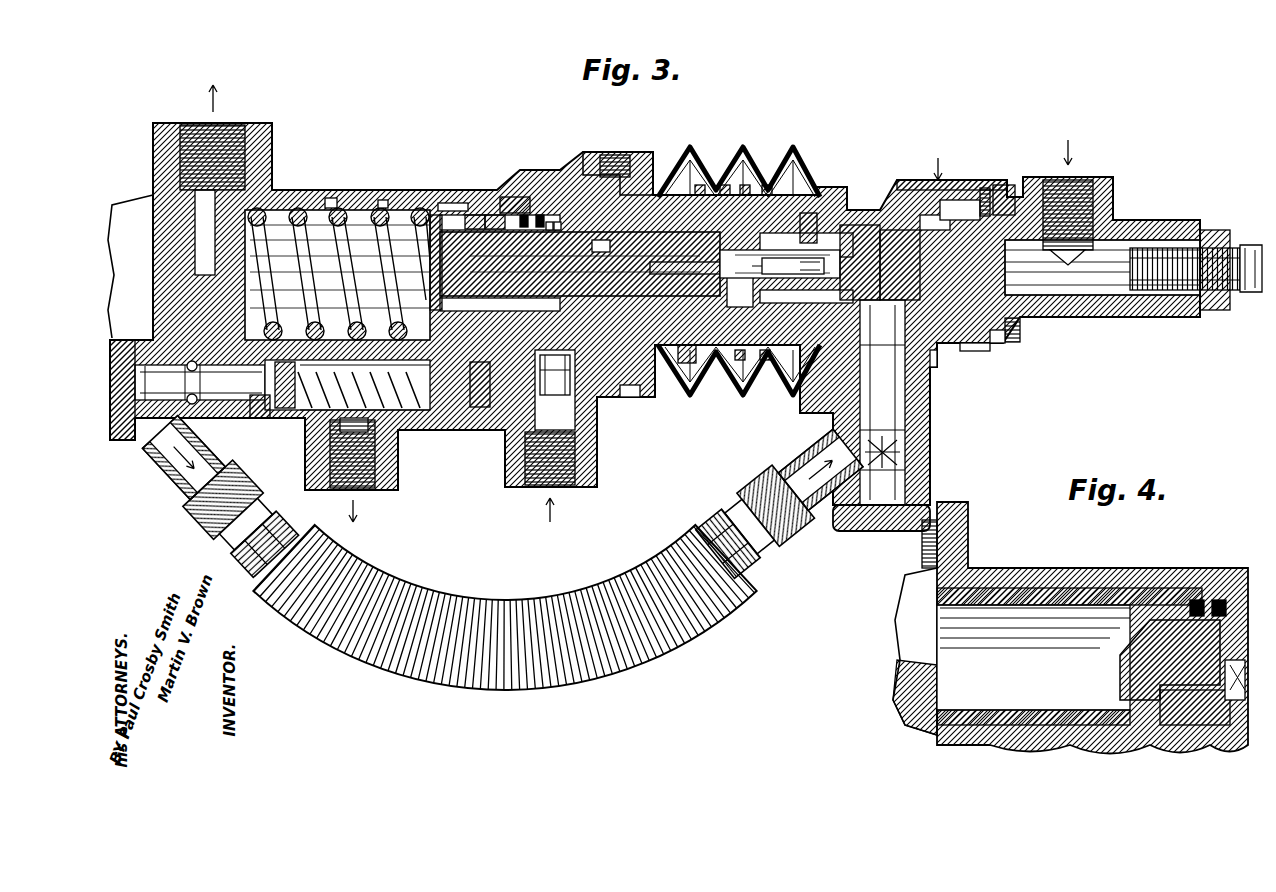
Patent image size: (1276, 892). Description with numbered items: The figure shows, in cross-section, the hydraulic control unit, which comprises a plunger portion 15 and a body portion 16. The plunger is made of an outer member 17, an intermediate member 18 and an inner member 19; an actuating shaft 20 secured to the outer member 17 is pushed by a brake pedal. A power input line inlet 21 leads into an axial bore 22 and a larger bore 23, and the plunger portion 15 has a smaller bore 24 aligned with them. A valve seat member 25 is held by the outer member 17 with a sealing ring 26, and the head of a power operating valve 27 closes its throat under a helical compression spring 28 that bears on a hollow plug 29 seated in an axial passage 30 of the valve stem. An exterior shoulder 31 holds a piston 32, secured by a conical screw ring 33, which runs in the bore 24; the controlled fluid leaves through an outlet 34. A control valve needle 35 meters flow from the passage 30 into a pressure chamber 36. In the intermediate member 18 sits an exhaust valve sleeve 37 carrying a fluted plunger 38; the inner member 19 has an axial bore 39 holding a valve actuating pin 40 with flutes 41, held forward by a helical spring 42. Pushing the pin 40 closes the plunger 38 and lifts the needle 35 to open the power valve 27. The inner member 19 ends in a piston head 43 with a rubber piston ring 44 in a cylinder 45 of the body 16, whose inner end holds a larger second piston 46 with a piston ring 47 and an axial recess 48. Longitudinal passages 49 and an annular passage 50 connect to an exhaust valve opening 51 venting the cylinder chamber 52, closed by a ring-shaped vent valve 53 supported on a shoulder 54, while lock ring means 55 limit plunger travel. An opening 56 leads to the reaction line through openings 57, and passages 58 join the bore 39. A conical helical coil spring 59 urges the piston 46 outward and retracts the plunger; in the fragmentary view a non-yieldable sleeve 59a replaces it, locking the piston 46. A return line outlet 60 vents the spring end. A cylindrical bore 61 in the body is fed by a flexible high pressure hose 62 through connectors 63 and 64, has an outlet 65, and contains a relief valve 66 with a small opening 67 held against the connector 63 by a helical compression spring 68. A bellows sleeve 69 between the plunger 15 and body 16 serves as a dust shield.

In FIG. 3, the plunger portion 15 is at (952, 153).
In FIG. 3, the body portion 16 is at (425, 188).
In FIG. 4, the body portion 16 is at (1047, 566).
In FIG. 3, the outer member 17 is at (1175, 223).
In FIG. 3, the intermediate member 18 is at (1000, 186).
In FIG. 3, the inner member 19 is at (662, 240).
In FIG. 3, the actuating shaft 20 is at (1247, 246).
In FIG. 3, the power input line inlet 21 is at (1062, 180).
In FIG. 3, the axial bore 22 is at (1037, 292).
In FIG. 3, the bore of larger diameter 23 is at (1000, 345).
In FIG. 3, the bore 24 is at (880, 235).
In FIG. 3, the valve seat member 25 is at (928, 215).
In FIG. 3, the sealing ring 26 is at (985, 200).
In FIG. 3, the power operating valve 27 is at (905, 212).
In FIG. 3, the helical compression spring 28 is at (1015, 342).
In FIG. 3, the hollow plug 29 is at (975, 355).
In FIG. 3, the axial passage 30 is at (860, 222).
In FIG. 3, the exterior shoulder 31 is at (836, 215).
In FIG. 3, the piston 32 is at (806, 215).
In FIG. 3, the conical screw ring 33 is at (746, 195).
In FIG. 3, the outlet 34 is at (935, 370).
In FIG. 3, the control valve needle 35 is at (767, 192).
In FIG. 3, the pressure chamber 36 is at (726, 195).
In FIG. 3, the exhaust valve sleeve 37 is at (770, 392).
In FIG. 3, the plunger 38 is at (742, 398).
In FIG. 3, the axial bore 39 is at (715, 392).
In FIG. 3, the valve actuating pin 40 is at (585, 240).
In FIG. 3, the flutes 41 is at (600, 250).
In FIG. 3, the helical spring 42 is at (355, 205).
In FIG. 3, the piston head 43 is at (686, 185).
In FIG. 3, the piston ring 44 is at (700, 190).
In FIG. 3, the cylinder 45 is at (625, 210).
In FIG. 3, the second piston 46 is at (415, 196).
In FIG. 4, the second piston 46 is at (1160, 590).
In FIG. 3, the piston ring 47 is at (487, 440).
In FIG. 3, the axial recess 48 is at (385, 205).
In FIG. 3, the longitudinal passages 49 is at (441, 200).
In FIG. 4, the longitudinal passages 49 is at (1160, 700).
In FIG. 3, the annular passage 50 is at (515, 218).
In FIG. 3, the exhaust valve opening 51 is at (526, 216).
In FIG. 4, the exhaust valve opening 51 is at (1200, 598).
In FIG. 3, the cylinder chamber 52 is at (615, 178).
In FIG. 3, the exhaust or vent valve 53 is at (540, 216).
In FIG. 4, the exhaust or vent valve 53 is at (1225, 598).
In FIG. 3, the shoulder 54 is at (492, 212).
In FIG. 3, the lock ring means 55 is at (556, 228).
In FIG. 3, the opening 56 is at (565, 410).
In FIG. 4, the opening 56 is at (1238, 745).
In FIG. 3, the openings 57 is at (547, 224).
In FIG. 3, the passages 58 is at (470, 208).
In FIG. 3, the helical coil spring 59 is at (330, 202).
In FIG. 4, the non-yieldable sleeve 59a is at (960, 600).
In FIG. 3, the return line outlet 60 is at (207, 243).
In FIG. 3, the cylindrical bore 61 is at (455, 405).
In FIG. 3, the flexible high pressure hose 62 is at (545, 600).
In FIG. 3, the connector 63 is at (120, 342).
In FIG. 3, the connector 64 is at (888, 532).
In FIG. 3, the outlet 65 is at (390, 432).
In FIG. 3, the relief valve 66 is at (262, 420).
In FIG. 3, the small opening 67 is at (290, 412).
In FIG. 3, the helical compression spring 68 is at (482, 405).
In FIG. 3, the bellows sleeve 69 is at (688, 400).